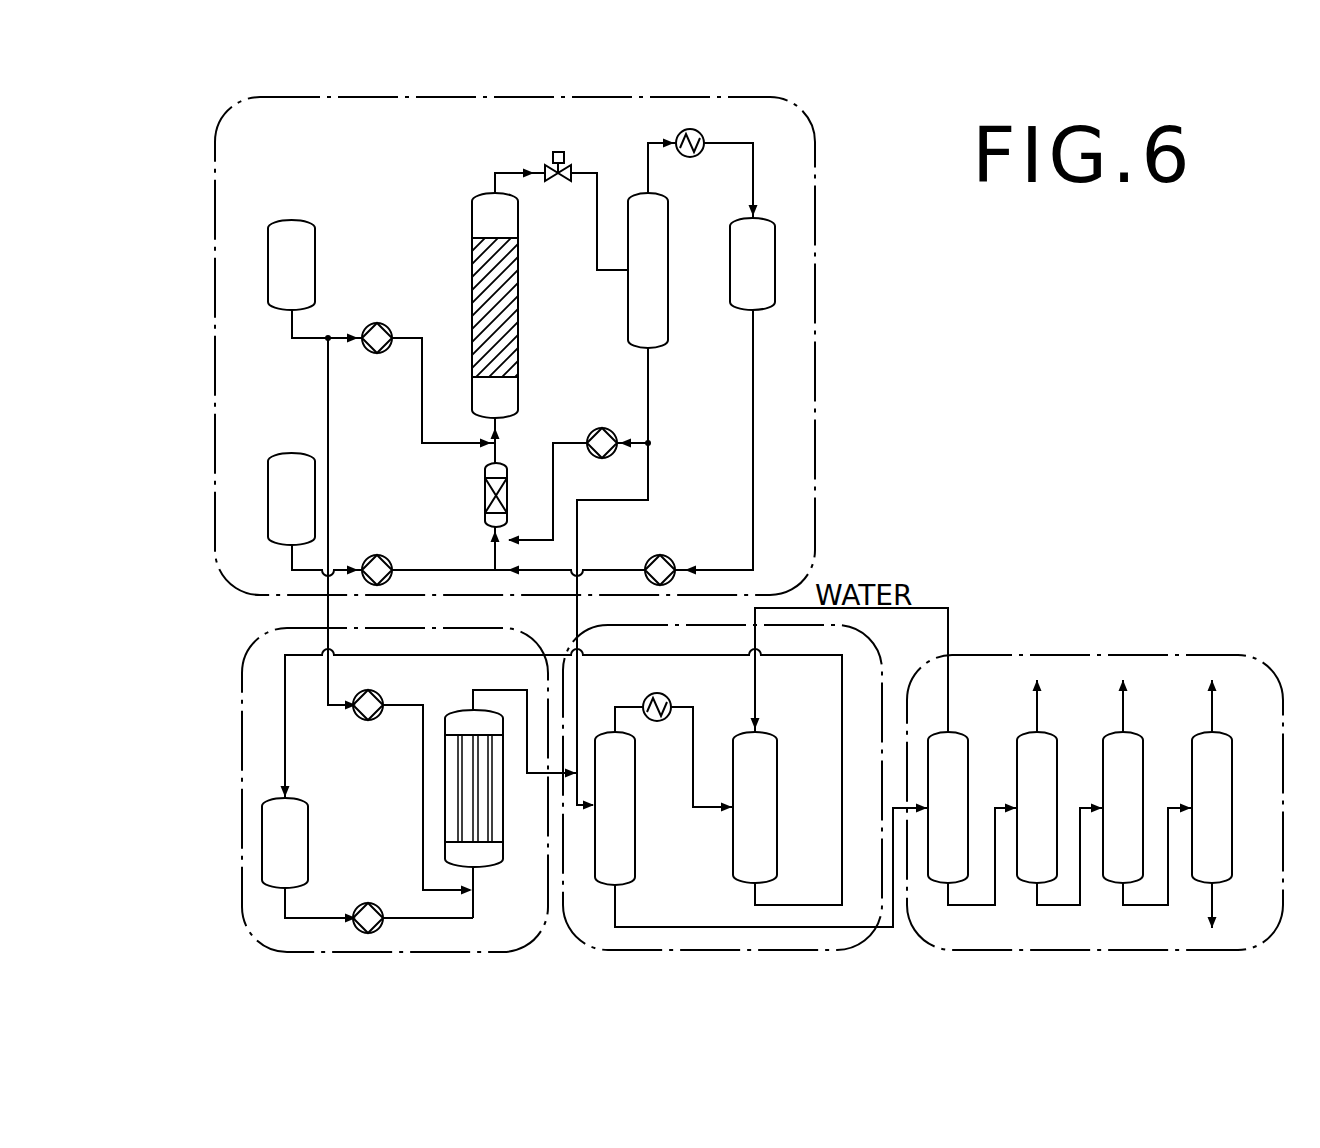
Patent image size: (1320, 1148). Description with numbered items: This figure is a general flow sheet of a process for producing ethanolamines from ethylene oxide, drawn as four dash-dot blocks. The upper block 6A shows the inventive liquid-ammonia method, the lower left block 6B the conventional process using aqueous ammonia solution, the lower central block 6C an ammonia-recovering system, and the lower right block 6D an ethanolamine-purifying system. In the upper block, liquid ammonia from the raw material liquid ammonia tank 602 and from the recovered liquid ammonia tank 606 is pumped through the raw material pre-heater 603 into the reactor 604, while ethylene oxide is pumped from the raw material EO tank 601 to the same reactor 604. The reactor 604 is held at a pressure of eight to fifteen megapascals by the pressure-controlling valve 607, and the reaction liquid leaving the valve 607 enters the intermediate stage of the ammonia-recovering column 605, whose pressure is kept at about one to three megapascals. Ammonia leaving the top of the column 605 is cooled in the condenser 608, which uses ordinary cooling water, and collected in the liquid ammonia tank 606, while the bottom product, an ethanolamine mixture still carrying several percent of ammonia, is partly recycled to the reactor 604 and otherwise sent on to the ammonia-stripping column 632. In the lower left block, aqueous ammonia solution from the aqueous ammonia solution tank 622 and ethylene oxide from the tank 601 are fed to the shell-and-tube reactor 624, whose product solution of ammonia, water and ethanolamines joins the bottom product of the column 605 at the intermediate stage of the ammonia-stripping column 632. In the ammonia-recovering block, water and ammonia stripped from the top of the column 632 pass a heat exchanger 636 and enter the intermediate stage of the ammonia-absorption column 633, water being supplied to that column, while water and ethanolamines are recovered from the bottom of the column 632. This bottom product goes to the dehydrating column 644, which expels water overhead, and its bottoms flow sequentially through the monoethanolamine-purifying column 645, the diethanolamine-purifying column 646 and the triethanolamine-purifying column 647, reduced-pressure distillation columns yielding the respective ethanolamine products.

The raw material EO tank 601 is at (291, 232).
The raw material liquid ammonia tank 602 is at (291, 466).
The raw material pre-heater 603 is at (487, 503).
The reactor 604 is at (487, 272).
The ammonia-recovering column 605 is at (638, 311).
The liquid ammonia tank 606 is at (737, 238).
The pressure-controlling valve 607 is at (557, 155).
The condenser 608 is at (683, 132).
The aqueous ammonia solution tank 622 is at (295, 810).
The reactor 624 is at (470, 712).
The ammonia-stripping column 632 is at (663, 862).
The ammonia-absorption column 633 is at (765, 870).
The heat exchanger 636 is at (667, 697).
The dehydrating column 644 is at (960, 745).
The monoethanolamine (MEA)-purifying column 645 is at (1048, 745).
The diethanolamine (DEA)-purifying column 646 is at (1134, 745).
The triethanolamine (TEA)-purifying column 647 is at (1258, 713).
The upper block 6A is at (824, 352).
The lower left block 6B is at (236, 736).
The lower central block 6C is at (882, 645).
The lower right block 6D is at (1072, 645).